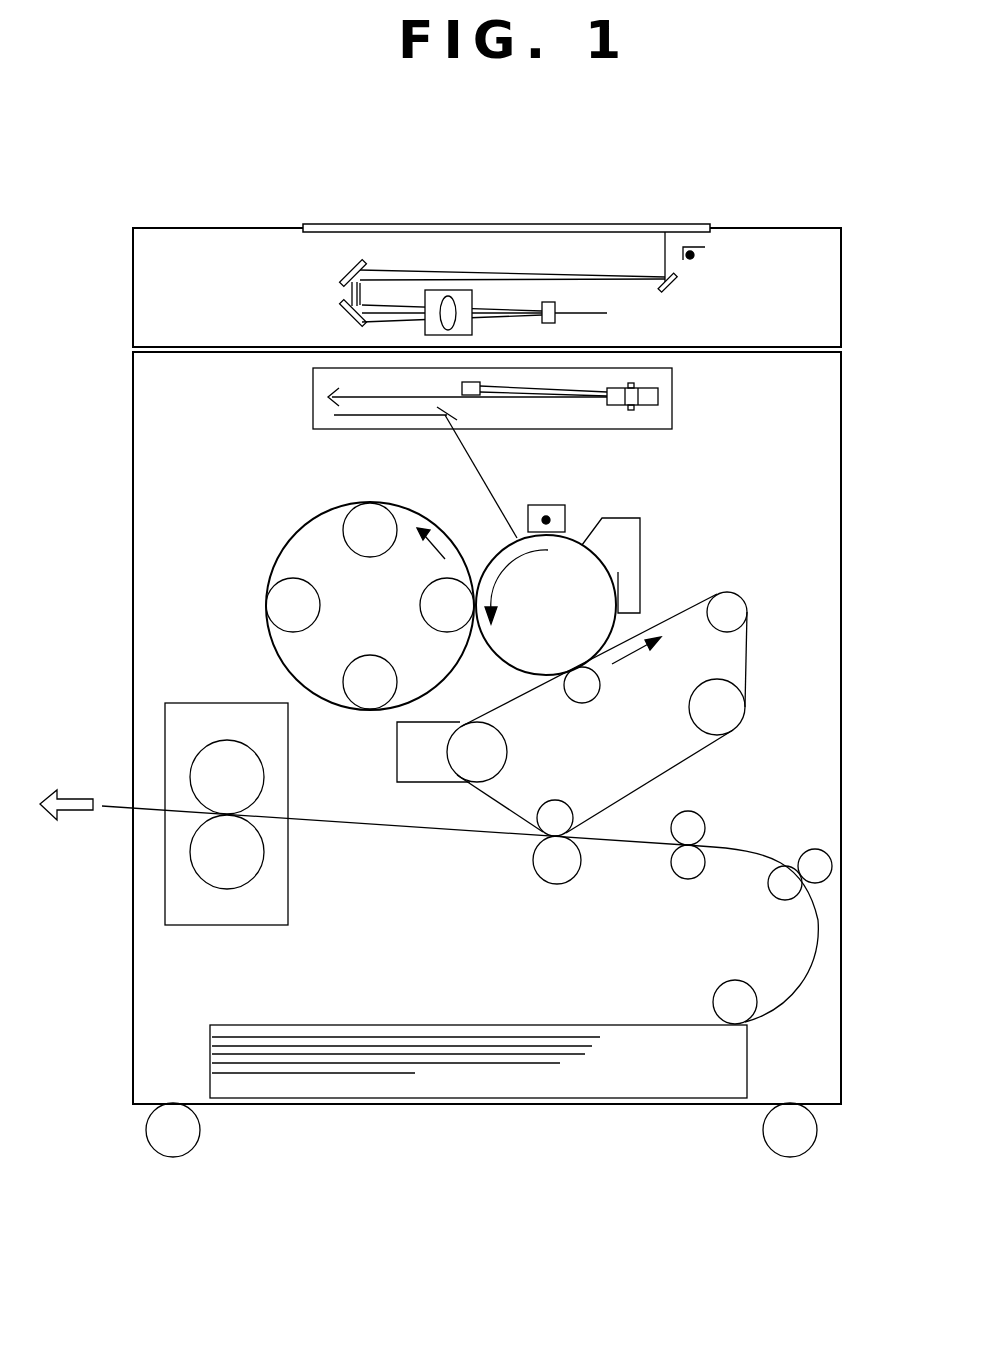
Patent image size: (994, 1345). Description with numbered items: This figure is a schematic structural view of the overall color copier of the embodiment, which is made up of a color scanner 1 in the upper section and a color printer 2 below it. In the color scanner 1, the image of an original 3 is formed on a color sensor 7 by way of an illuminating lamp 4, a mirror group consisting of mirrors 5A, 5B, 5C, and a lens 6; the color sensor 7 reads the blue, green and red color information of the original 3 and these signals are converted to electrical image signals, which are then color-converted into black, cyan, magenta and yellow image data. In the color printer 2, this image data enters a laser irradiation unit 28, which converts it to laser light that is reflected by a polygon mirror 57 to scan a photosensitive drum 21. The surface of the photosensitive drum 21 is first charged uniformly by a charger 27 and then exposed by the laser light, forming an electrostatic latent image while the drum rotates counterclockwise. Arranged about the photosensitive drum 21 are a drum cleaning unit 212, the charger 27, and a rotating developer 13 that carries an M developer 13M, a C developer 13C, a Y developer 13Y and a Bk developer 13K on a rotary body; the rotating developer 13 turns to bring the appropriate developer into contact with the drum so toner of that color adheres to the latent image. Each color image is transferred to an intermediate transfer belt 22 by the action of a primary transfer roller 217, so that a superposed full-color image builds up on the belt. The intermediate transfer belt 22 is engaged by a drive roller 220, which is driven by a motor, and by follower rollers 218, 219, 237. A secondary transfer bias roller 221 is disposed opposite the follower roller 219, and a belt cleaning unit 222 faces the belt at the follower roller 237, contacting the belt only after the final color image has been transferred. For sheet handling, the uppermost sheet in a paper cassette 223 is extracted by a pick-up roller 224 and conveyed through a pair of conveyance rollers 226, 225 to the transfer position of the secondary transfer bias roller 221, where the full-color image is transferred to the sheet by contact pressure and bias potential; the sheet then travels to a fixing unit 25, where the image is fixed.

The color scanner 1 is at (808, 208).
The color printer 2 is at (860, 380).
The original 3 is at (328, 224).
The illuminating lamp 4 is at (700, 262).
The mirror 5A is at (675, 290).
The mirror 5B is at (345, 278).
The mirror 5C is at (342, 316).
The lens 6 is at (473, 300).
The color sensor 7 is at (558, 305).
The rotating developer 13 is at (266, 634).
The Bk developer 13K is at (342, 517).
The C developer 13C is at (272, 580).
The M developer 13M is at (450, 578).
The Y developer 13Y is at (338, 700).
The photosensitive drum 21 is at (584, 540).
The intermediate transfer belt 22 is at (748, 662).
The fixing unit 25 is at (180, 703).
The charger 27 is at (546, 505).
The laser irradiation unit 28 is at (673, 380).
The polygon mirror 57 is at (655, 405).
The drum cleaning unit 212 is at (641, 530).
The primary transfer roller 217 is at (594, 702).
The follower roller 218 is at (738, 596).
The follower roller 219 is at (556, 800).
The drive roller 220 is at (728, 734).
The secondary transfer bias roller 221 is at (556, 885).
The belt cleaning unit 222 is at (396, 776).
The paper cassette 223 is at (240, 1024).
The pick-up roller 224 is at (720, 984).
The conveyance roller 225 is at (706, 826).
The conveyance roller 226 is at (833, 866).
The follower roller 237 is at (486, 722).